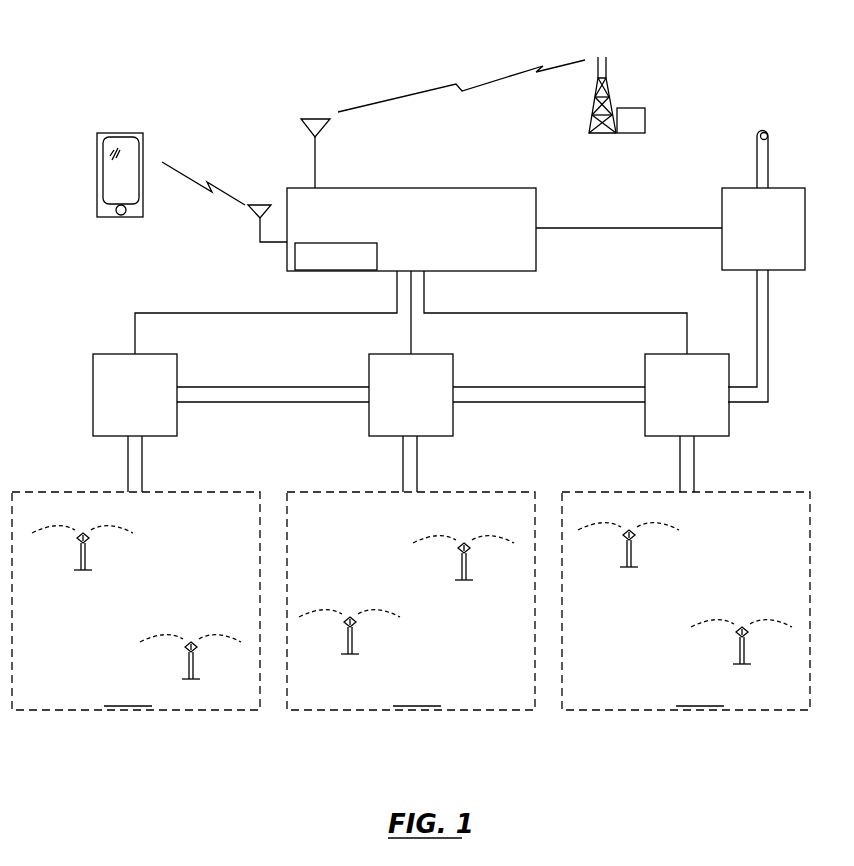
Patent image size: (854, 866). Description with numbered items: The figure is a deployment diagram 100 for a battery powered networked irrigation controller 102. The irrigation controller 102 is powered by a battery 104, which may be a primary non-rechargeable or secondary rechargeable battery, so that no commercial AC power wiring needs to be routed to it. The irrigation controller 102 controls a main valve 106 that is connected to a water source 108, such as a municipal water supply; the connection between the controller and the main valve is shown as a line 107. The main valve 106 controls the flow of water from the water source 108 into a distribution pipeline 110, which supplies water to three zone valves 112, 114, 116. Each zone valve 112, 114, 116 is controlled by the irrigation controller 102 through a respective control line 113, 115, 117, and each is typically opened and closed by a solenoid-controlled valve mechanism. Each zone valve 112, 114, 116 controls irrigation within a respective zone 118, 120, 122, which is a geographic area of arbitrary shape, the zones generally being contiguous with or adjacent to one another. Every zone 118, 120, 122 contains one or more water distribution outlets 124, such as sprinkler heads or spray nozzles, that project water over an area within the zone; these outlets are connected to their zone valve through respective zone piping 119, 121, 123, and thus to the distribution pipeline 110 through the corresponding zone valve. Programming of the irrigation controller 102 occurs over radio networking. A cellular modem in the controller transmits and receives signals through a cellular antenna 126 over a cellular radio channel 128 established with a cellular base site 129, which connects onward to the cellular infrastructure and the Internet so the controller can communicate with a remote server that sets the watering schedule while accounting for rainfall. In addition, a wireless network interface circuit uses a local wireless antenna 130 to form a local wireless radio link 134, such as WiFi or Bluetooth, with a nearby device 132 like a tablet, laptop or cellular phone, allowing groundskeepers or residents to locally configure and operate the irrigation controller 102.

The deployment diagram 100 is at (181, 31).
The irrigation controller 102 is at (536, 207).
The battery 104 is at (318, 273).
The main valve 106 is at (722, 207).
The control line to main valve 107 is at (653, 228).
The water source 108 is at (757, 158).
The distribution pipeline 110 is at (268, 387).
The zone valve 112 is at (113, 354).
The control line 113 is at (177, 313).
The zone valve 114 is at (387, 354).
The control line 115 is at (411, 333).
The zone valve 116 is at (672, 354).
The control line 117 is at (545, 313).
The zone 118 is at (136, 624).
The zone piping 119 is at (142, 475).
The zone 120 is at (347, 710).
The zone piping 121 is at (417, 472).
The zone 122 is at (622, 710).
The zone piping 123 is at (680, 473).
The water distribution outlets 124 is at (191, 643).
The cellular antenna 126 is at (310, 140).
The cellular radio channel 128 is at (435, 85).
The cellular base site 129 is at (645, 118).
The local wireless antenna 130 is at (258, 233).
The nearby device 132 is at (112, 218).
The local wireless radio link 134 is at (175, 167).